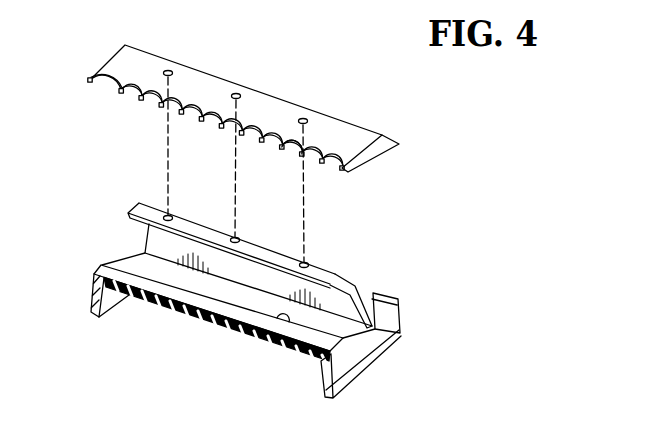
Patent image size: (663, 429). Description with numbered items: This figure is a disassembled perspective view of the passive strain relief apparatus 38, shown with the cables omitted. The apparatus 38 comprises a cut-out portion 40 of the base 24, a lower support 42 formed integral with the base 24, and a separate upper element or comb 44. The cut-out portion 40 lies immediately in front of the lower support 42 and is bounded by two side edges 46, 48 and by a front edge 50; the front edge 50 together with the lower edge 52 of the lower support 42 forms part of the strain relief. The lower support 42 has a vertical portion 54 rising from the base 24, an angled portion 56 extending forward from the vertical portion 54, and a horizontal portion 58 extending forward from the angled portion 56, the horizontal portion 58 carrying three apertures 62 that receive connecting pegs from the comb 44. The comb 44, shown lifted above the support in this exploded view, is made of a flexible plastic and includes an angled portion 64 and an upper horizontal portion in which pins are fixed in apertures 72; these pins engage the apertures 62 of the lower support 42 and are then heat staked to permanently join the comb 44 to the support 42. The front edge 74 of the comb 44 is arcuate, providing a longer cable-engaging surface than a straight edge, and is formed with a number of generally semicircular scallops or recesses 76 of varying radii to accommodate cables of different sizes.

The base 24 is at (252, 320).
The passive strain relief apparatus 38 is at (420, 185).
The cut-out portion 40 is at (238, 298).
The lower support 42 is at (354, 265).
The upper element or comb 44 is at (291, 100).
The side edge 46 is at (107, 255).
The side edge 48 is at (378, 338).
The front edge 50 is at (272, 316).
The lower edge 52 is at (345, 311).
The vertical portion 54 is at (139, 220).
The angled portion 56 is at (350, 279).
The horizontal portion 58 is at (127, 199).
The apertures 62 is at (163, 208).
The angled portion 64 is at (380, 129).
The apertures 72 is at (160, 62).
The front edge 74 is at (284, 136).
The scallops or recesses 76 is at (102, 76).